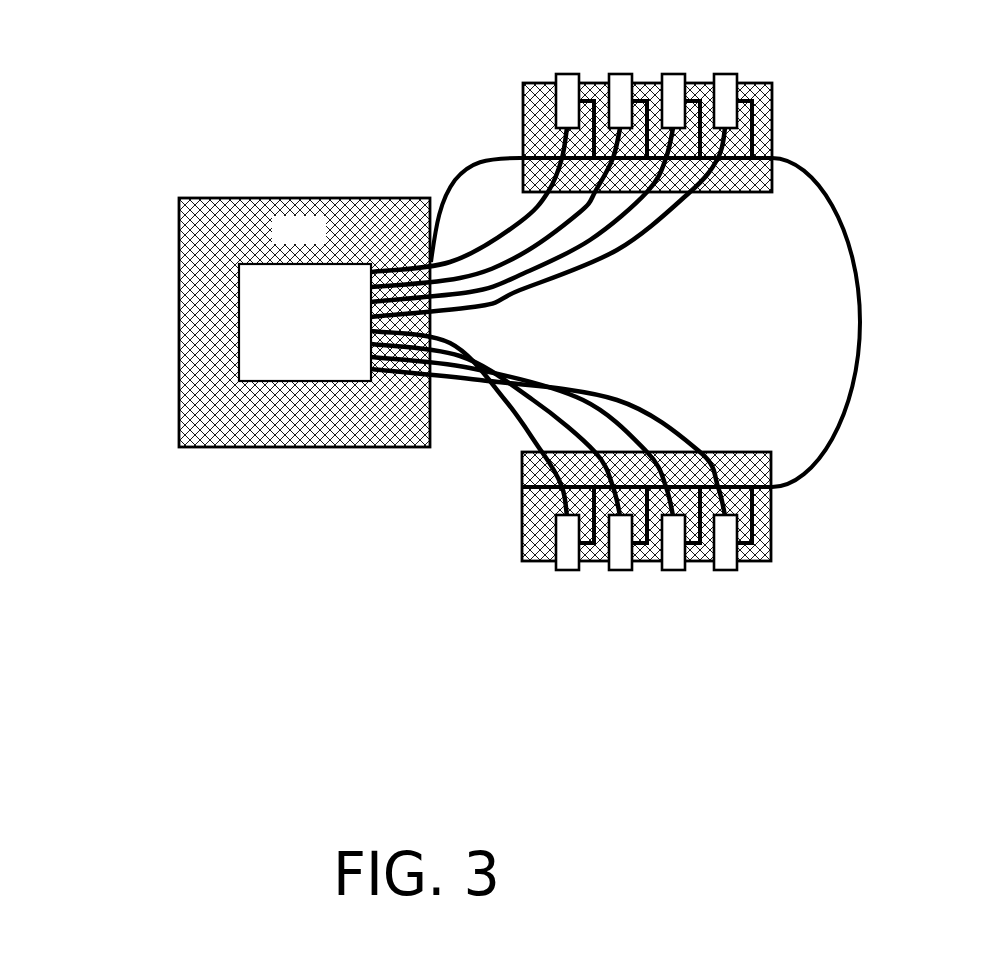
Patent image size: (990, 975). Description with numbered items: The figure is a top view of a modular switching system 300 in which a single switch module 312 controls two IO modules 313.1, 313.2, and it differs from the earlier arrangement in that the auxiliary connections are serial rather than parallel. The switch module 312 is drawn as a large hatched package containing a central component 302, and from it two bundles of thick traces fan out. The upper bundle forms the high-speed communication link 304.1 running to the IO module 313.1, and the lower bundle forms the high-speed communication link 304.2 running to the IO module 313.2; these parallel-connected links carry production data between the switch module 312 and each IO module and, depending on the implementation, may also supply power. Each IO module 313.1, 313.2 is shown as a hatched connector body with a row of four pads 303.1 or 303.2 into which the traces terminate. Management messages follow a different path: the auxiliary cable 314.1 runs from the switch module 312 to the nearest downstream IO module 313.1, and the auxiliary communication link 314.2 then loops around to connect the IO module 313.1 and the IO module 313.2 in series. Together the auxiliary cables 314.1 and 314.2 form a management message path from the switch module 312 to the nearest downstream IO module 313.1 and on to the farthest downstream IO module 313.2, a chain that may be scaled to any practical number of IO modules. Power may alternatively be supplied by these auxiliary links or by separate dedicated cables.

The modular switching system 300 is at (148, 139).
The die 302 is at (327, 336).
The switch module 312 is at (320, 240).
The pads of first connector 303.1 is at (738, 74).
The pads of second connector 303.2 is at (738, 571).
The high-speed communication link 304.1 is at (668, 218).
The high-speed communication link 304.2 is at (670, 424).
The IO module 313.1 is at (772, 113).
The IO module 313.2 is at (775, 530).
The auxiliary cable 314.1 is at (447, 188).
The auxiliary communication link 314.2 is at (858, 297).